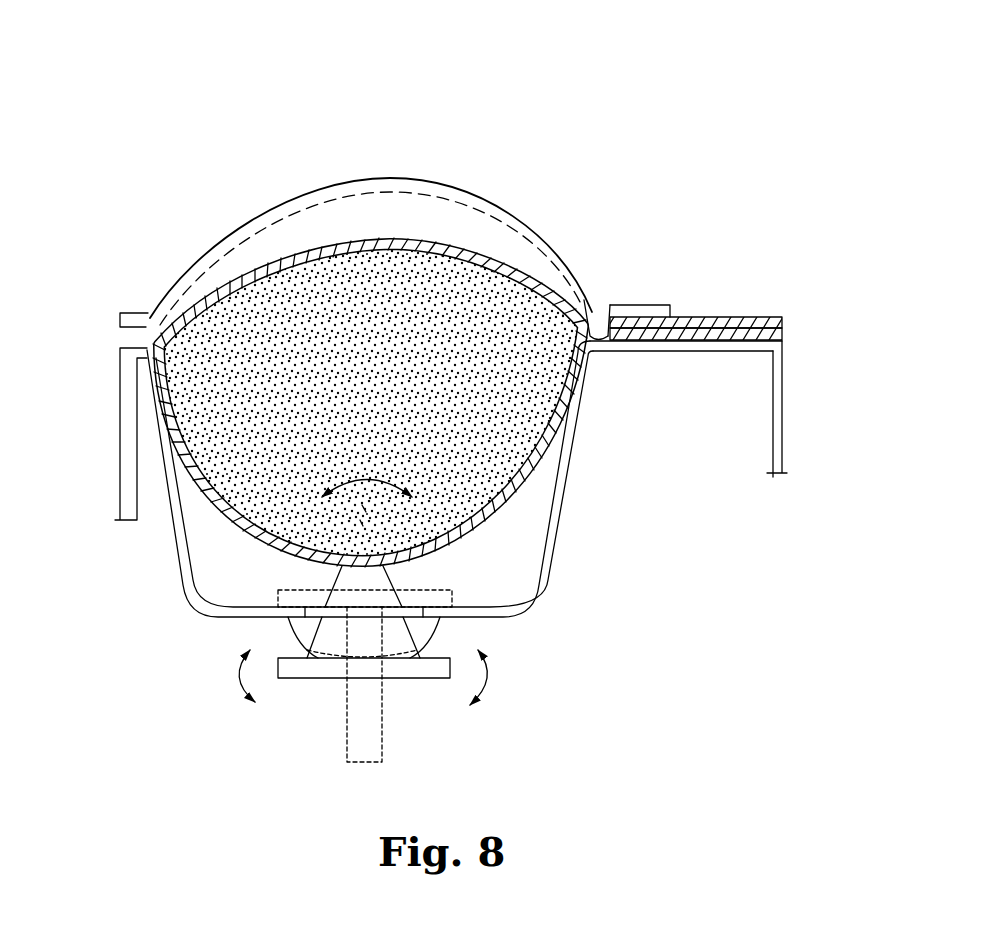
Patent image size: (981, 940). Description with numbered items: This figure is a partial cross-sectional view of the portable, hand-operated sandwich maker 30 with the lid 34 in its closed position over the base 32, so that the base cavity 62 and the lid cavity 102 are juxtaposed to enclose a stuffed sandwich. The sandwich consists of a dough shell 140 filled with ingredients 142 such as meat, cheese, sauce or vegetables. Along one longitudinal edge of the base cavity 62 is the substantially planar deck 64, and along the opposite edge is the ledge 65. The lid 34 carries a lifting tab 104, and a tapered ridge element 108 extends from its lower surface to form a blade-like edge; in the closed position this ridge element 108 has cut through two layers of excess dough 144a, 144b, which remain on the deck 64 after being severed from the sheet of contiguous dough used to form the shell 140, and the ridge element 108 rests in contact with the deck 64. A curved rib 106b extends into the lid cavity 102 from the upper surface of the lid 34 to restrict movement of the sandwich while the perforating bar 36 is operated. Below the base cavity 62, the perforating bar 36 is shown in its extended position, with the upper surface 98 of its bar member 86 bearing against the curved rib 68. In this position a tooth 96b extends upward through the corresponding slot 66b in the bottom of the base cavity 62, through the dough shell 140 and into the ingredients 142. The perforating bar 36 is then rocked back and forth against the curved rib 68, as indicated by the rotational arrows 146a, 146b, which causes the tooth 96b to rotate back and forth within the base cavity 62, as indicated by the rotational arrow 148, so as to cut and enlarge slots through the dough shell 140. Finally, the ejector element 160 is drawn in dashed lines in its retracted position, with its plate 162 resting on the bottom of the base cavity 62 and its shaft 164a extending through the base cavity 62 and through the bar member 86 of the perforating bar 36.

The sandwich maker 30 is at (600, 83).
The base 32 is at (708, 493).
The lid 34 is at (456, 181).
The perforating bar 36 is at (324, 746).
The base cavity 62 is at (527, 545).
The deck 64 is at (675, 352).
The ledge 65 is at (133, 345).
The slot 66b is at (428, 621).
The curved rib 68 is at (293, 630).
The bar member 86 is at (284, 680).
The tooth 96b is at (372, 578).
The upper surface 98 is at (280, 660).
The lid cavity 102 is at (565, 297).
The lifting tab 104 is at (655, 305).
The curved rib 106b is at (233, 245).
The ridge element 108 is at (600, 308).
The dough shell 140 is at (540, 455).
The ingredients 142 is at (536, 362).
The excess dough layer 144a is at (782, 320).
The excess dough layer 144b is at (782, 338).
The rotational arrow 146a is at (490, 678).
The rotational arrow 146b is at (236, 678).
The rotational arrow 148 is at (370, 478).
The ejector element 160 is at (366, 770).
The plate 162 is at (282, 596).
The shaft 164a is at (366, 738).